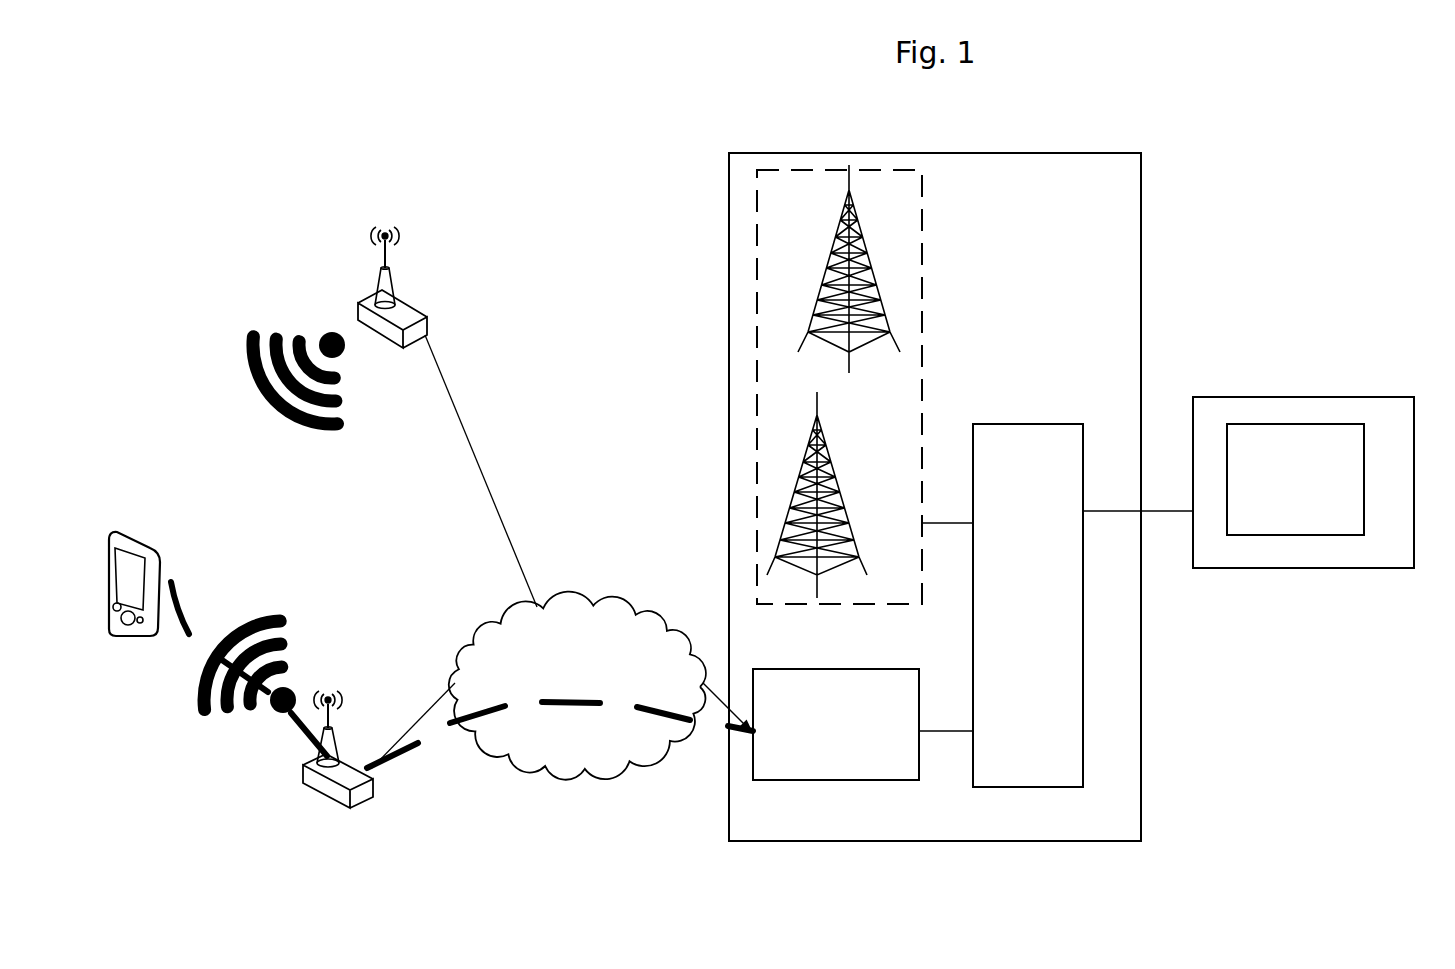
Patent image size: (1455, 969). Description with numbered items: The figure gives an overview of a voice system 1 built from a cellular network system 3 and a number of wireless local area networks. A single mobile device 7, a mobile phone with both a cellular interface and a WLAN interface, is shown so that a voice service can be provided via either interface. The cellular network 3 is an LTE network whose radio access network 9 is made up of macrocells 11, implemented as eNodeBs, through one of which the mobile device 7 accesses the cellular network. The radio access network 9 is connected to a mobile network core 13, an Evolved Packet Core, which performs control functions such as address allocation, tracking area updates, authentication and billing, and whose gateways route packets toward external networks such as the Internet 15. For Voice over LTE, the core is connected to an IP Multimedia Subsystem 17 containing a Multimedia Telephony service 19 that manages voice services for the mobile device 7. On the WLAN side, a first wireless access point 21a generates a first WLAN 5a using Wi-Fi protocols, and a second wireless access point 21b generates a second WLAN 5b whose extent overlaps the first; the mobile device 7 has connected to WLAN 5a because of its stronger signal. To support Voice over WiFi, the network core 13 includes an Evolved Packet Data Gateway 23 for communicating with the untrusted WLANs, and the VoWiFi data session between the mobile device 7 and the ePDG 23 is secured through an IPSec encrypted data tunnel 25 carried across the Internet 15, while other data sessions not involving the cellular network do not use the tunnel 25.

The voice system 1 is at (688, 915).
The cellular network system 3 is at (1141, 272).
The first WLAN 5a is at (265, 682).
The second WLAN 5b is at (299, 348).
The mobile device 7 is at (134, 567).
The radio access network 9 is at (922, 287).
The macrocell 11 is at (833, 381).
The mobile network core 13 is at (1055, 424).
The Internet 15 is at (577, 673).
The IP Multimedia Subsystem 17 is at (1414, 471).
The Multimedia Telephony service 19 is at (1278, 423).
The first wireless access point 21a is at (379, 769).
The second wireless access point 21b is at (447, 417).
The Evolved Packet Data Gateway 23 is at (800, 669).
The encrypted data tunnel 25 is at (560, 742).